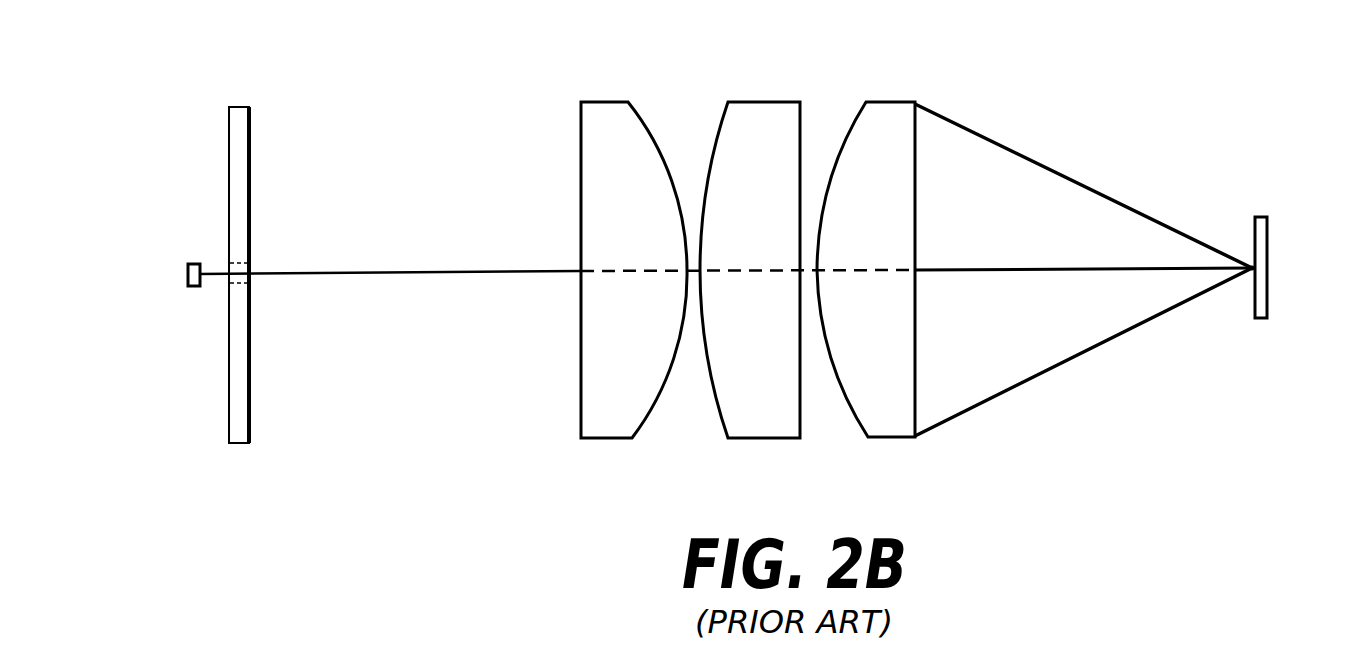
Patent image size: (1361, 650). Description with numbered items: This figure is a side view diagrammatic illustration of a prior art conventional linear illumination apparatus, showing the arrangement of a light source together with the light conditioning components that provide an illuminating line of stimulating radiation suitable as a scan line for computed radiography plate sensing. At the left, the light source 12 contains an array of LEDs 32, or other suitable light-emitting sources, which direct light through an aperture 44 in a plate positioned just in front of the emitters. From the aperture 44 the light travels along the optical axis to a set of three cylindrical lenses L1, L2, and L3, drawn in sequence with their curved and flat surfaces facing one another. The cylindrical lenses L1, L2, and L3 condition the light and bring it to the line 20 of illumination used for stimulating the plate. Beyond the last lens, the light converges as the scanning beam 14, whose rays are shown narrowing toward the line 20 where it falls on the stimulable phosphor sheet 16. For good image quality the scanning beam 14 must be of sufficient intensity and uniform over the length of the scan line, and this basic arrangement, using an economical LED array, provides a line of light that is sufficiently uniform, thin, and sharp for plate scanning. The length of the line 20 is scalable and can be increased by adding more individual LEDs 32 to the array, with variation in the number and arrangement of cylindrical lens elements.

The light source 12 is at (154, 225).
The LEDs 32 is at (186, 273).
The aperture 44 is at (250, 284).
The cylindrical lens L1 is at (607, 101).
The cylindrical lens L2 is at (769, 101).
The cylindrical lens L3 is at (888, 101).
The scanning beam 14 is at (1115, 336).
The line of illumination 20 is at (1250, 264).
The stimulable phosphor sheet 16 is at (1268, 285).